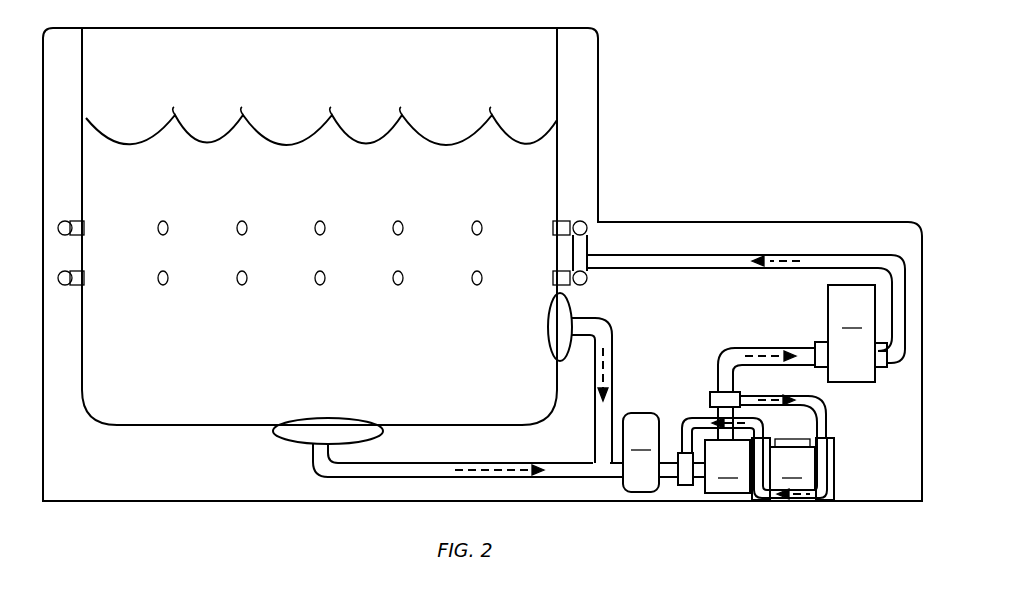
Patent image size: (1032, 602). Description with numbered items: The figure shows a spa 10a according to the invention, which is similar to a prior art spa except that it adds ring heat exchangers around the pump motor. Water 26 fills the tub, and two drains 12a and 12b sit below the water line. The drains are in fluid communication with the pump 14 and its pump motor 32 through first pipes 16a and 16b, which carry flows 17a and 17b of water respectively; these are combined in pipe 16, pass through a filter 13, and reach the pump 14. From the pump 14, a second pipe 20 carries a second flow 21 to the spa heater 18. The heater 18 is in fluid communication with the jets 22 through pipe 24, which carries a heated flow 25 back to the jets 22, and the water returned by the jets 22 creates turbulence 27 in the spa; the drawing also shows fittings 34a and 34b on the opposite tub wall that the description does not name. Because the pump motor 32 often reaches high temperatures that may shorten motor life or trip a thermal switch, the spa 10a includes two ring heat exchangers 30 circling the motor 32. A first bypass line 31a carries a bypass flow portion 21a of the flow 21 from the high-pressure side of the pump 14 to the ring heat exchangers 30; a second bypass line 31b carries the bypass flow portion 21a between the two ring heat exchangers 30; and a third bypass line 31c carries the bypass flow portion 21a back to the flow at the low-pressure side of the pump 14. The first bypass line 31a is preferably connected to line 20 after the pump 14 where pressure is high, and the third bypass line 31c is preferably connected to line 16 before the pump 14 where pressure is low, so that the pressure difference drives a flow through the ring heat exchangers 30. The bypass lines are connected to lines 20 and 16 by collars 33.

The spa 10a is at (740, 120).
The water 26 is at (330, 188).
The turbulence 27 is at (288, 145).
The jets 22 is at (158, 226).
The upper inlet fitting 34a is at (67, 223).
The lower inlet fitting 34b is at (67, 285).
The drain 12a is at (303, 432).
The drain 12b is at (568, 330).
The first pipe 16a is at (432, 470).
The flow 17b is at (498, 470).
The flow 17a is at (612, 340).
The first pipe 16b is at (595, 428).
The filter 13 is at (641, 452).
The pipe 16 is at (670, 478).
The collars 33 is at (688, 482).
The pump 14 is at (727, 466).
The pump motor 32 is at (792, 464).
The third bypass line 31c is at (702, 419).
The second flow 21 is at (752, 355).
The second pipe 20 is at (800, 355).
The spa heater 18 is at (851, 333).
The pipe 24 is at (818, 262).
The heated flow 25 is at (773, 262).
The bypass flow portion 21a is at (756, 400).
The first bypass line 31a is at (822, 417).
The ring heat exchangers 30 is at (758, 502).
The second bypass line 31b is at (812, 502).